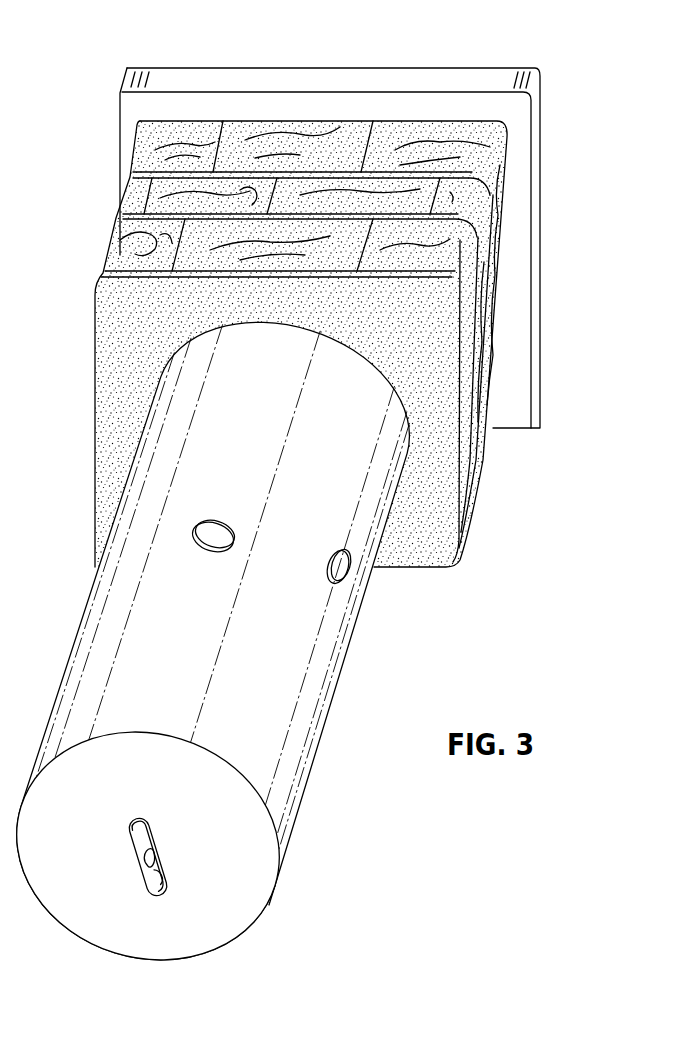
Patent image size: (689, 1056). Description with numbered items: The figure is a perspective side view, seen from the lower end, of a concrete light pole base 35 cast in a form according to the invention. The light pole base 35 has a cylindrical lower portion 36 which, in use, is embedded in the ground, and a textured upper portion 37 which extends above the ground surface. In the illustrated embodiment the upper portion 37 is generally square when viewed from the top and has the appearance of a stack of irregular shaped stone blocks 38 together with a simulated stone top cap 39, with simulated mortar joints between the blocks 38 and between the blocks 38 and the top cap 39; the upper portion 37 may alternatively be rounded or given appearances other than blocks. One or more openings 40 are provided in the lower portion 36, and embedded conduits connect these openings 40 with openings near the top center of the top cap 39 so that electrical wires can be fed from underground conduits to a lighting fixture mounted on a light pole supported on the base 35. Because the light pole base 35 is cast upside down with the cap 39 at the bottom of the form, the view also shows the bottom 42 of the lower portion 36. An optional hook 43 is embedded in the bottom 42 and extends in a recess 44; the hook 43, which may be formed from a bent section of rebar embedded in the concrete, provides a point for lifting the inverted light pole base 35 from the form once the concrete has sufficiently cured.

The light pole base 35 is at (232, 657).
The cylindrical lower portion 36 is at (76, 638).
The textured upper portion 37 is at (331, 344).
The stone blocks 38 is at (117, 250).
The top cap 39 is at (540, 164).
The openings 40 is at (228, 530).
The bottom 42 is at (260, 862).
The hook 43 is at (137, 875).
The recess 44 is at (143, 893).